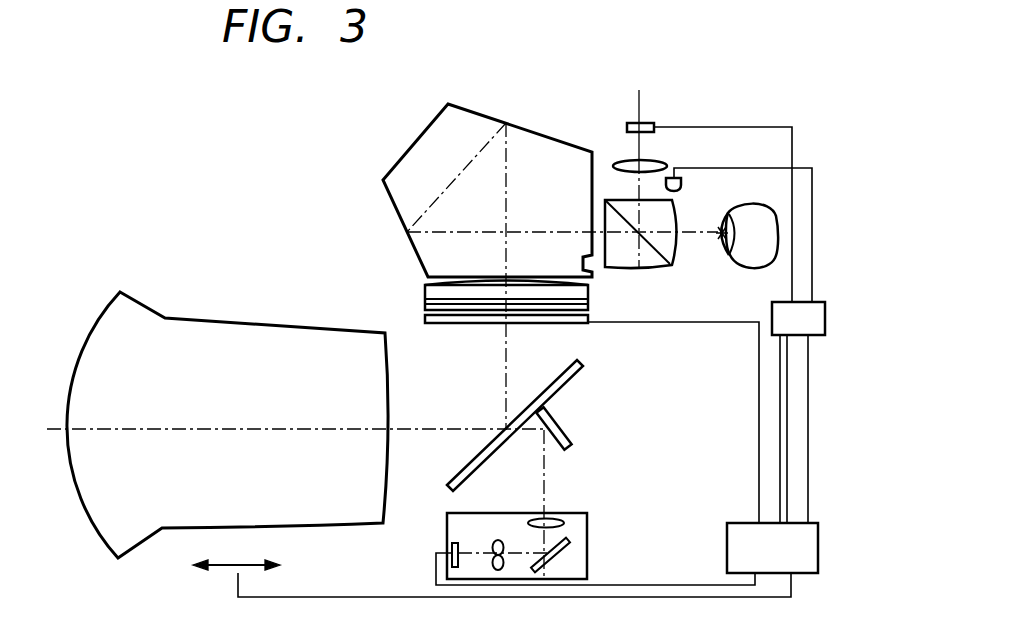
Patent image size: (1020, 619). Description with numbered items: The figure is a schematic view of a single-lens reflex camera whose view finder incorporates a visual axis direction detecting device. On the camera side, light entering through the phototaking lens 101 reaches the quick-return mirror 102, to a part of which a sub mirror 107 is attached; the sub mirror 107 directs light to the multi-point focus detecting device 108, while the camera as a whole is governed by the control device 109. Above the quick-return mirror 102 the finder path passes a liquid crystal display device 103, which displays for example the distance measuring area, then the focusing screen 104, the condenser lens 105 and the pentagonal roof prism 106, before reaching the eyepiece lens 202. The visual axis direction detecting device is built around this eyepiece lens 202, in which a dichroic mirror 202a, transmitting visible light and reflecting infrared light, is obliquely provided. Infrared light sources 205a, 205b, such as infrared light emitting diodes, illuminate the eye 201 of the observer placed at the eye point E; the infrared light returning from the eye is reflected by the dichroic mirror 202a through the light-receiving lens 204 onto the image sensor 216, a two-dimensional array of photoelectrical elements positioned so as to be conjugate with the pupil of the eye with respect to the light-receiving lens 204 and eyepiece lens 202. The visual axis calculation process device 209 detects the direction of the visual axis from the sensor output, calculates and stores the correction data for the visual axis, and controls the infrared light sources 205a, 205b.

The phototaking lens 101 is at (73, 285).
The quick-return mirror 102 is at (581, 368).
The liquid crystal display device 103 is at (588, 322).
The focusing screen 104 is at (470, 305).
The condenser lens 105 is at (425, 282).
The pentagonal roof prism 106 is at (428, 128).
The sub mirror 107 is at (573, 445).
The multi-point focus detecting device 108 is at (587, 528).
The control device 109 is at (818, 523).
The eye of observer 201 is at (777, 237).
The eyepiece lens 202 is at (625, 208).
The dichroic mirror 202a is at (662, 255).
The light-receiving lens 204 is at (663, 160).
The infrared light source 205a is at (795, 188).
The infrared light source 205b is at (681, 185).
The visual axis calculation process device 209 is at (825, 302).
The image sensor 216 is at (654, 125).
The eye point E is at (722, 236).